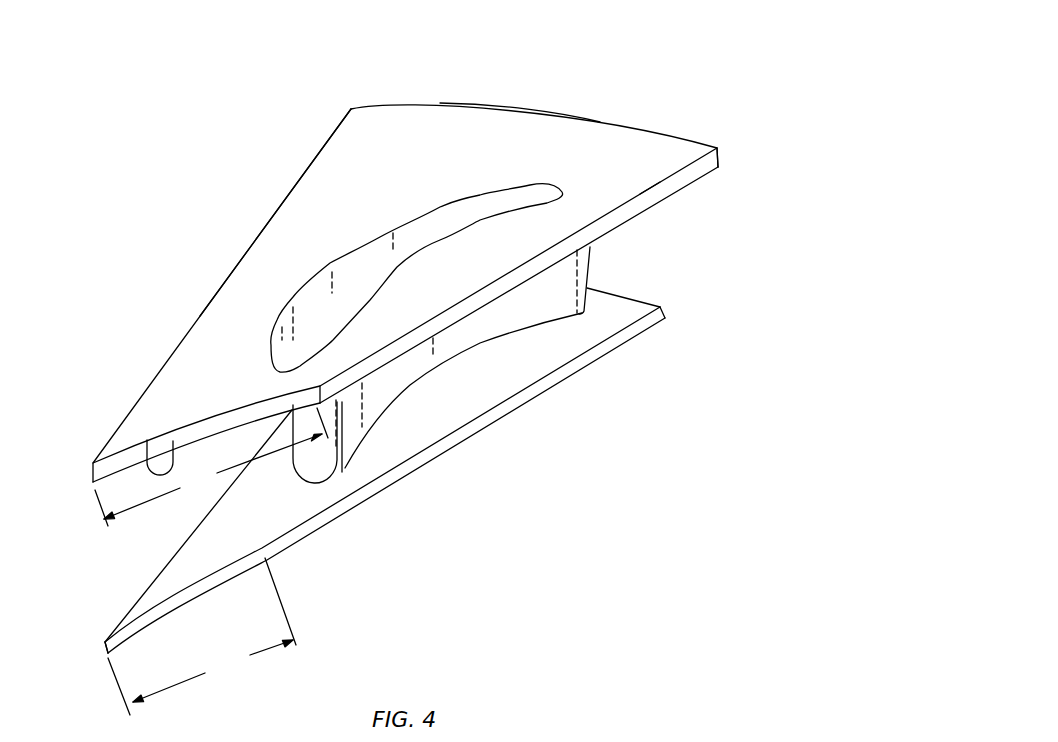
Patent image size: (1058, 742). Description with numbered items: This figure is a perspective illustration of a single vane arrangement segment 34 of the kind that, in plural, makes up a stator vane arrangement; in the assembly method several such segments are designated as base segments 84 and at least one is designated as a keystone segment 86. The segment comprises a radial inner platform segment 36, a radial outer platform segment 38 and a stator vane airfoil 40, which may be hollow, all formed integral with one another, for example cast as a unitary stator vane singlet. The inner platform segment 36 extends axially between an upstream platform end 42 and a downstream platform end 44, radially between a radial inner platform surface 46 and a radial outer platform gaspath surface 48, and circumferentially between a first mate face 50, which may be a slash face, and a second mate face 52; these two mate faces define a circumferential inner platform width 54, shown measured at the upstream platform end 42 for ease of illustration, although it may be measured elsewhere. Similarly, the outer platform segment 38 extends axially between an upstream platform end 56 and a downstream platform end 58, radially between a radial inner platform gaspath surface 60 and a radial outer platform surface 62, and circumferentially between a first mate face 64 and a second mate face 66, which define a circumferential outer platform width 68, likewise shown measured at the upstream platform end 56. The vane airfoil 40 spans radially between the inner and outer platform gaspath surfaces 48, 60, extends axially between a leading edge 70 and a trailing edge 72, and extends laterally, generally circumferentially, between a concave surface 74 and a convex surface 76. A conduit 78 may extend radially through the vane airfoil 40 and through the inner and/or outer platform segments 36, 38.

The vane arrangement segment 34 is at (727, 92).
The base segment 84 is at (755, 77).
The keystone segment 86 is at (755, 77).
The radial inner platform segment 36 is at (616, 344).
The radial outer platform segment 38 is at (718, 147).
The stator vane airfoil 40 is at (591, 283).
The upstream platform end 42 is at (167, 603).
The downstream platform end 44 is at (641, 302).
The radial inner platform surface 46 is at (312, 522).
The radial outer platform gaspath surface 48 is at (271, 550).
The first mate face 50 is at (147, 605).
The second mate face 52 is at (343, 512).
The circumferential inner platform width 54 is at (202, 636).
The upstream platform end 56 is at (148, 442).
The downstream platform end 58 is at (557, 110).
The radial inner platform gaspath surface 60 is at (685, 180).
The radial outer platform surface 62 is at (635, 180).
The first mate face 64 is at (313, 158).
The second mate face 66 is at (660, 193).
The circumferential outer platform width 68 is at (208, 480).
The leading edge 70 is at (313, 466).
The trailing edge 72 is at (590, 250).
The concave surface 74 is at (458, 345).
The convex surface 76 is at (293, 428).
The conduit 78 is at (328, 316).